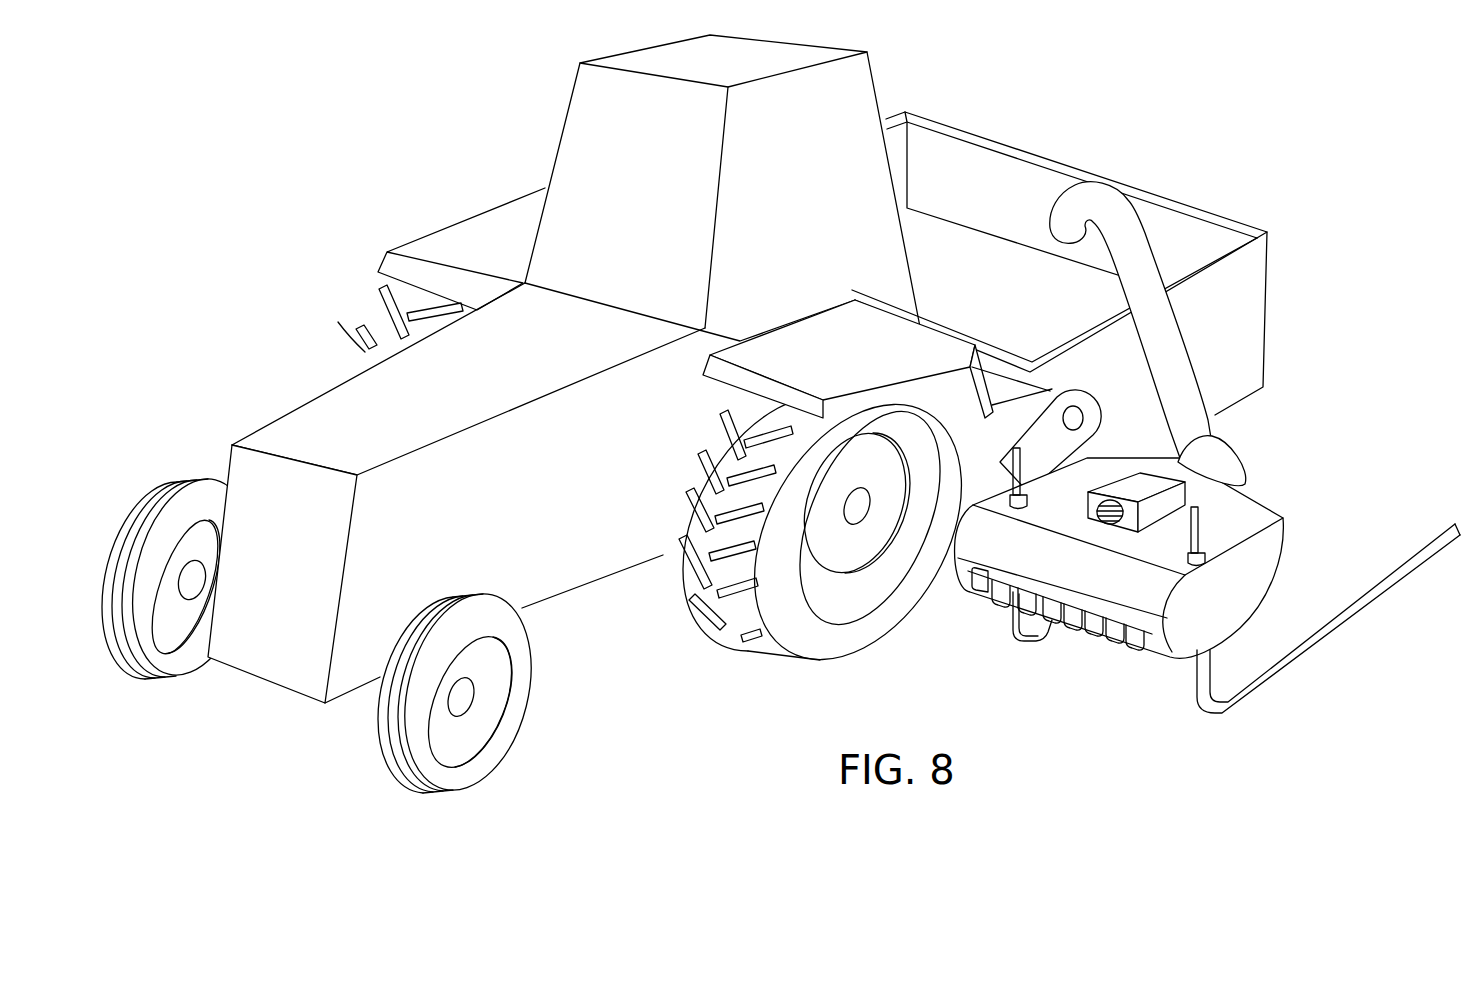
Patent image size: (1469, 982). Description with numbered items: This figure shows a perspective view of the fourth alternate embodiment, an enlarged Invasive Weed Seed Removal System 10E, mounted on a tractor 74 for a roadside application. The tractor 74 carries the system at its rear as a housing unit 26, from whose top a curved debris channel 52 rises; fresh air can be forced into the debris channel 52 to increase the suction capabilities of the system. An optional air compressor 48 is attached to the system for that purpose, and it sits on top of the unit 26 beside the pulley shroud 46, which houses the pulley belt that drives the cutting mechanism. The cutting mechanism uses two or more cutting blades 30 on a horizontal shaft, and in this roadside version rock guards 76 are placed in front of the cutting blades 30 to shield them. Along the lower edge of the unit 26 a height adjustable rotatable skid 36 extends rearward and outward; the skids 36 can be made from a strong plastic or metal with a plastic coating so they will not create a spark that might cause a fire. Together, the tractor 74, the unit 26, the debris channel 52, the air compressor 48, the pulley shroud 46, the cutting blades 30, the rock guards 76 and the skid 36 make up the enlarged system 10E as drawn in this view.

The Invasive Weed Seed Removal System 10E is at (684, 361).
The tractor 74 is at (385, 418).
The debris channel 52 is at (1163, 343).
The pulley shroud 46 is at (1058, 447).
The air compressor 48 is at (1143, 487).
The dispensing housing 26 is at (1000, 543).
The cutting blades 30 is at (1110, 628).
The rock guards 76 is at (1073, 617).
The height adjustable rotatable skids 36 is at (1310, 643).